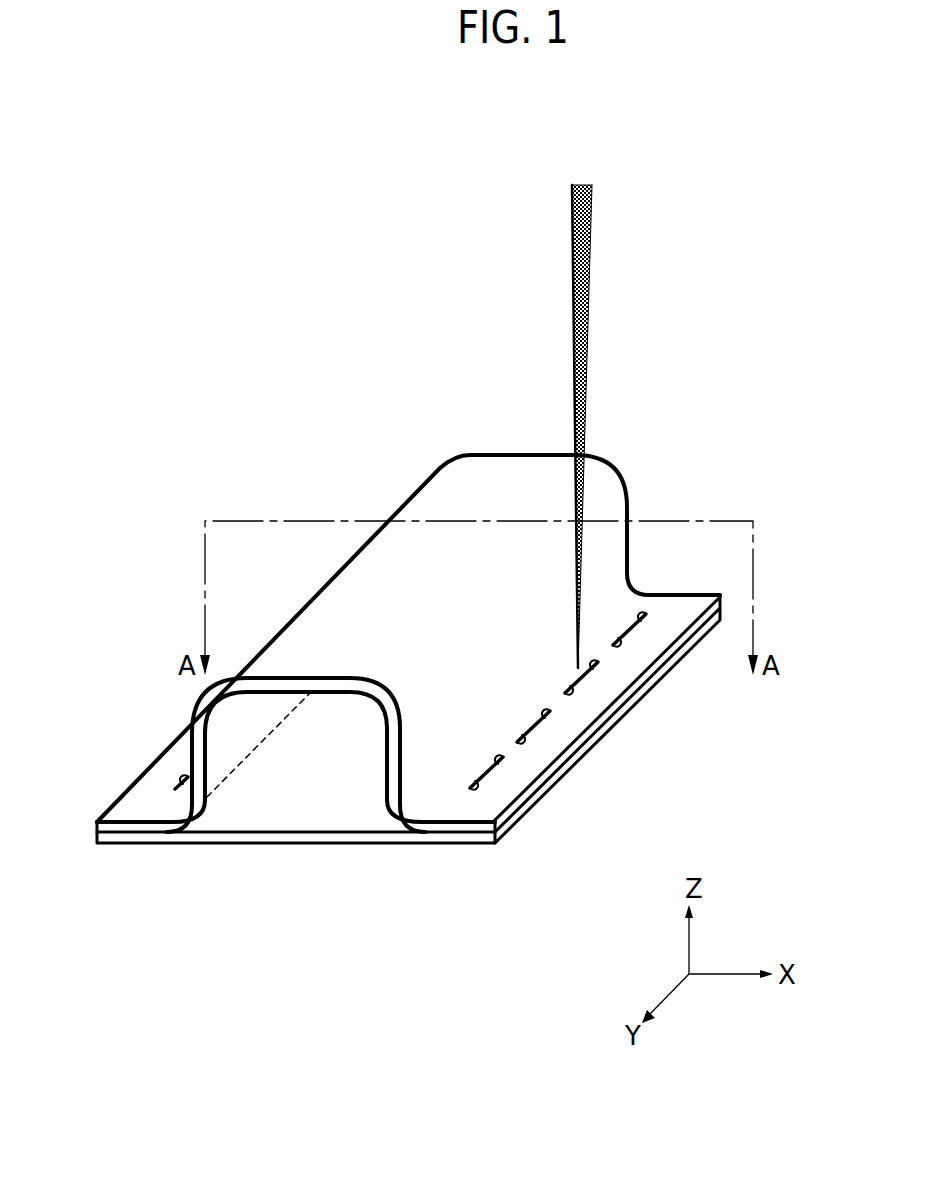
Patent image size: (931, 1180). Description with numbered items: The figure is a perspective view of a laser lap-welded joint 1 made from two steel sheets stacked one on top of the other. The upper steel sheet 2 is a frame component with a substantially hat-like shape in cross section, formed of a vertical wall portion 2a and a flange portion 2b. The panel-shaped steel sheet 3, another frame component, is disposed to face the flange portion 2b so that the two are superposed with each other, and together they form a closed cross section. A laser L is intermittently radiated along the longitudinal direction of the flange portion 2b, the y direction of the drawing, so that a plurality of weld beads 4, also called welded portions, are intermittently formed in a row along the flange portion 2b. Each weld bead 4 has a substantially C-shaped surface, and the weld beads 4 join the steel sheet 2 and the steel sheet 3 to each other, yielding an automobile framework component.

The laser lap-welded joint 1 is at (232, 329).
The steel sheet 2 is at (408, 681).
The vertical wall portion 2a is at (387, 783).
The flange portion 2b is at (454, 820).
The panel-shaped steel sheet 3 is at (248, 847).
The weld beads 4 is at (173, 787).
The laser L is at (591, 268).